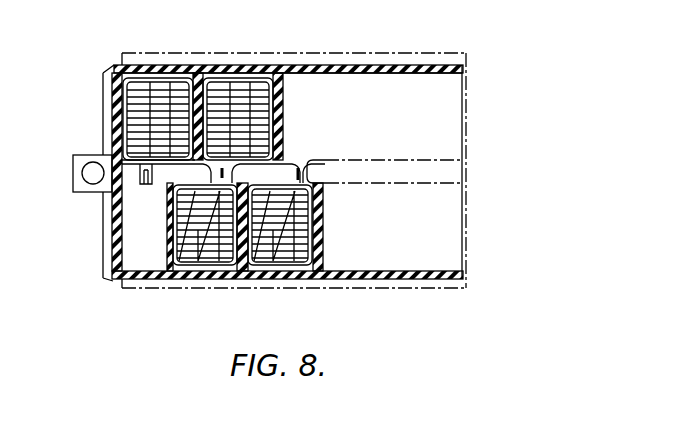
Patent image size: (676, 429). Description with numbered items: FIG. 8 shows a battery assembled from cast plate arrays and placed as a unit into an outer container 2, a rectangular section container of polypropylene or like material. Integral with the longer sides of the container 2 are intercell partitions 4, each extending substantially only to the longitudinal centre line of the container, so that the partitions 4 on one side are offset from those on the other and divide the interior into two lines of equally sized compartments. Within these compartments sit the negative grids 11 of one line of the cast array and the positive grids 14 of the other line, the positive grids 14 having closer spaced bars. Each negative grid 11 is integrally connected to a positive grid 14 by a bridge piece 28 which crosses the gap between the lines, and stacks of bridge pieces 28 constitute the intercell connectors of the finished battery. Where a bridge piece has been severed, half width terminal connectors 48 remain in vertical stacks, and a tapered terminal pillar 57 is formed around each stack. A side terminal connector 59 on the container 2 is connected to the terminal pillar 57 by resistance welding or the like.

The container 2 is at (298, 280).
The intercell partition 4 is at (277, 101).
The negative grid 11 is at (161, 94).
The positive grid 14 is at (212, 254).
The bridge piece 28 is at (263, 172).
The terminal connector 48 is at (138, 187).
The terminal pillar 57 is at (147, 186).
The side terminal connector 59 is at (81, 171).